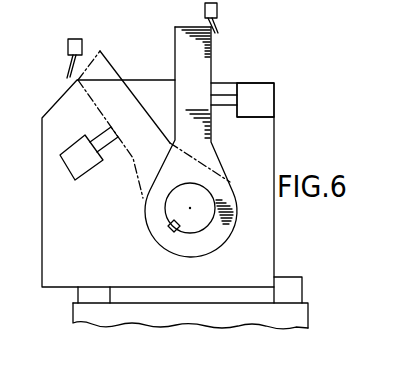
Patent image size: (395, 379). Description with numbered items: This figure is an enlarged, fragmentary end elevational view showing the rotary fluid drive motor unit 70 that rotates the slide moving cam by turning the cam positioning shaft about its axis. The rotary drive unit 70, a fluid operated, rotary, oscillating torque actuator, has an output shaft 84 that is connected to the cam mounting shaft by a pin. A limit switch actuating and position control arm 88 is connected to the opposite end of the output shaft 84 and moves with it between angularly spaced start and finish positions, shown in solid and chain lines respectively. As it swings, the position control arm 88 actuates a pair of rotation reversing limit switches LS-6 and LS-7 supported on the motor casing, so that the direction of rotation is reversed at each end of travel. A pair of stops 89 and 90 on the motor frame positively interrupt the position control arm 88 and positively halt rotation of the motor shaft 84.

The rotary fluid drive motor unit 70 is at (289, 139).
The output shaft 84 is at (203, 221).
The limit switch actuating and position control arm 88 is at (198, 73).
The stop 89 is at (85, 158).
The stop 90 is at (258, 100).
The rotation reversing limit switch LS-6 is at (68, 47).
The rotation reversing limit switch LS-7 is at (218, 13).